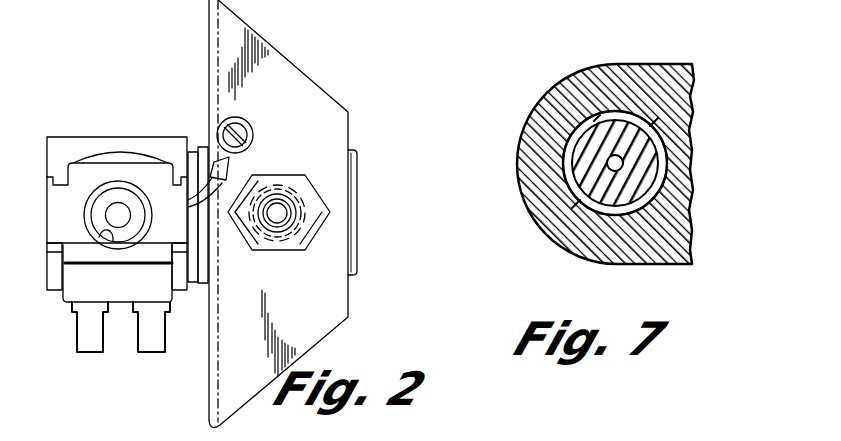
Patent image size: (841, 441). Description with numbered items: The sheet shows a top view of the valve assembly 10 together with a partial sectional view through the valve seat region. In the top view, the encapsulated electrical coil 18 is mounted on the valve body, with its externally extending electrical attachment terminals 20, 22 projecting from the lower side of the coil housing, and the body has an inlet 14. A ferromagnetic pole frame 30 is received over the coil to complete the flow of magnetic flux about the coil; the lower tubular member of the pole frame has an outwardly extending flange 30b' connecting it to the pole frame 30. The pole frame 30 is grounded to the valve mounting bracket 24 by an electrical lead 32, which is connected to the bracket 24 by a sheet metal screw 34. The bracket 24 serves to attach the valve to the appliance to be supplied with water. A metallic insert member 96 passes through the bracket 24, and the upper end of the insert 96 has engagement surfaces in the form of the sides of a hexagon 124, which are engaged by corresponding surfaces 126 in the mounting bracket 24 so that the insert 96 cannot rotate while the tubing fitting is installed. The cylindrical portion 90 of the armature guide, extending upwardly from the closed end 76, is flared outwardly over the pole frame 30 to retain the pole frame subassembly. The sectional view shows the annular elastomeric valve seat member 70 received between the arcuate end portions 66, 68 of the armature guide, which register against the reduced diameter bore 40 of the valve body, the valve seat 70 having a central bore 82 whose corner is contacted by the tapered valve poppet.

In FIG. 2, the valve assembly 10 is at (328, 78).
In FIG. 2, the inlet 14 is at (279, 244).
In FIG. 2, the encapsulated electrical coil 18 is at (99, 153).
In FIG. 2, the electrical attachment terminal 20 is at (72, 342).
In FIG. 2, the electrical attachment terminal 22 is at (165, 342).
In FIG. 2, the valve mounting bracket 24 is at (252, 352).
In FIG. 2, the pole frame 30 is at (101, 254).
In FIG. 2, the outwardly extending flange 30b' is at (127, 193).
In FIG. 2, the electrical lead 32 is at (207, 198).
In FIG. 2, the sheet metal screw 34 is at (246, 119).
In FIG. 7, the reduced diameter bore 40 is at (651, 107).
In FIG. 7, the arcuate end portion 66 is at (677, 227).
In FIG. 7, the arcuate end portion 68 is at (657, 128).
In FIG. 7, the annular valve seat member 70 is at (585, 183).
In FIG. 2, the closed end 76 is at (122, 210).
In FIG. 7, the central bore 82 is at (624, 168).
In FIG. 2, the cylindrical portion 90 is at (112, 241).
In FIG. 2, the insert member 96 is at (265, 189).
In FIG. 2, the hexagon 124 is at (309, 197).
In FIG. 2, the corresponding surfaces 126 is at (308, 217).